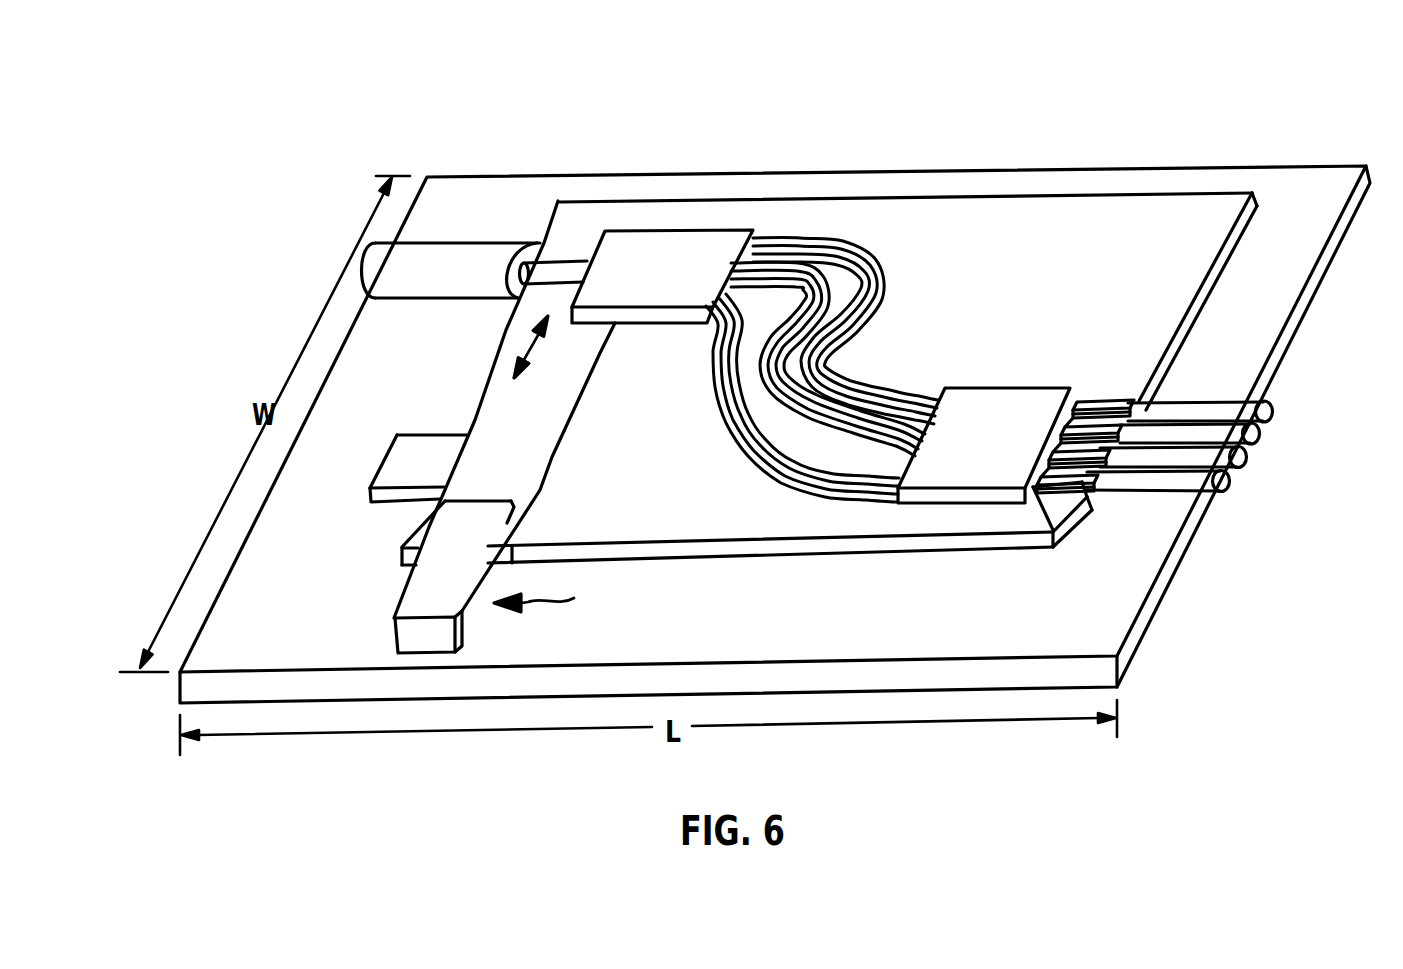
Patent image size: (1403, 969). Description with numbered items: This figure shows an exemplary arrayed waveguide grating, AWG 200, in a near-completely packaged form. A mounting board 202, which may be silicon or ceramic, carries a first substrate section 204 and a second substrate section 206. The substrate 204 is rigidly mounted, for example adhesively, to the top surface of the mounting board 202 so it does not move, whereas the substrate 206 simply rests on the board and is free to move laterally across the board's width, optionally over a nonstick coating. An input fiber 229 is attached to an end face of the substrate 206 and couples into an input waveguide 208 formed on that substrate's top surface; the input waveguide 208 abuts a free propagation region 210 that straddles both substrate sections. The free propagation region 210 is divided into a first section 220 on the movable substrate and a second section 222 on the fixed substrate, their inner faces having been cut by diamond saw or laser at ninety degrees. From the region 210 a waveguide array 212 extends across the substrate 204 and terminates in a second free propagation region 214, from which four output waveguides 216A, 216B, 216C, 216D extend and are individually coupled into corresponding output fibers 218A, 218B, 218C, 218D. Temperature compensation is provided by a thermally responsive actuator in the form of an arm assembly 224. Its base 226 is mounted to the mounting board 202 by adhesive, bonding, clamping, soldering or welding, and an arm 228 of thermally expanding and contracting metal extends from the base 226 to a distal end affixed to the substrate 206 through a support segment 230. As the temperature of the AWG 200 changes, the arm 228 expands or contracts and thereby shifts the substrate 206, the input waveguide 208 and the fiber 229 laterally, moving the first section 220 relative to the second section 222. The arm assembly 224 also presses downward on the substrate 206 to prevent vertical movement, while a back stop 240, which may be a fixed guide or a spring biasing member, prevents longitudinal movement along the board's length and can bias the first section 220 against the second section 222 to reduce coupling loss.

The AWG 200 is at (892, 98).
The mounting board 202 is at (185, 678).
The first substrate section 204 is at (1117, 207).
The second substrate section 206 is at (620, 205).
The input waveguide 208 is at (544, 262).
The free propagation region 210 is at (707, 240).
The waveguide array 212 is at (867, 341).
The second free propagation region 214 is at (1010, 402).
The output waveguide 216A is at (1078, 488).
The output waveguide 216B is at (1037, 448).
The output waveguide 216C is at (1082, 405).
The output waveguide 216D is at (1122, 398).
The output fiber 218A is at (1231, 491).
The output fiber 218B is at (1246, 464).
The output fiber 218C is at (1260, 437).
The output fiber 218D is at (1273, 407).
The first section 220 is at (590, 322).
The second section 222 is at (678, 320).
The arm assembly 224 is at (562, 611).
The base 226 is at (462, 631).
The arm 228 is at (400, 603).
The input fiber 229 is at (422, 290).
The support segment 230 is at (512, 517).
The back stop 240 is at (395, 470).